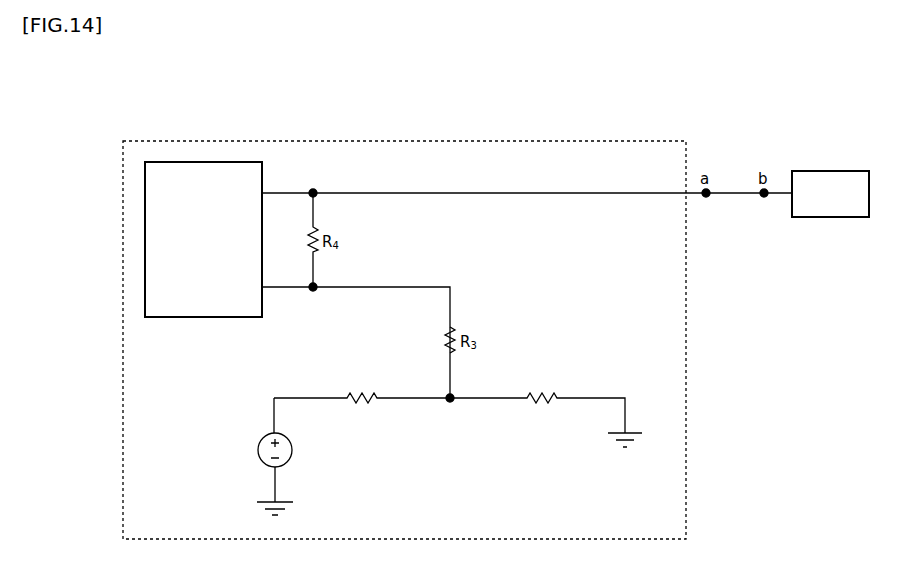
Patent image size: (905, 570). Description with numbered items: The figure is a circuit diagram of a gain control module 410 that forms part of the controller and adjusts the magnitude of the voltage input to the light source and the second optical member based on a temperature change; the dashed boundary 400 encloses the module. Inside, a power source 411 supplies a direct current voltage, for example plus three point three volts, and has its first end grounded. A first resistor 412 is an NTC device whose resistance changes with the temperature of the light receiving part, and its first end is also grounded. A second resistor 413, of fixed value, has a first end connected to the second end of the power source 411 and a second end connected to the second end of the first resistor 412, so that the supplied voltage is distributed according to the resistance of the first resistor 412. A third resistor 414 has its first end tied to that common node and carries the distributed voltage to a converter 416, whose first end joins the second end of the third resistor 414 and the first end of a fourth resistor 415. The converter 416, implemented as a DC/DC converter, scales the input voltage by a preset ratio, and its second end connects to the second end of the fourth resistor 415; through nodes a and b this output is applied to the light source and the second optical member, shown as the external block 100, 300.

The sensing circuit 400 is at (160, 97).
The gain control module 410 is at (686, 473).
The power source 411 is at (258, 450).
The first resistor 412 is at (587, 399).
The second resistor 413 is at (400, 398).
The third resistor 414 is at (453, 300).
The fourth resistor 415 is at (315, 207).
The converter 416 is at (236, 162).
The connector 100 is at (827, 171).
The device 300 is at (830, 194).